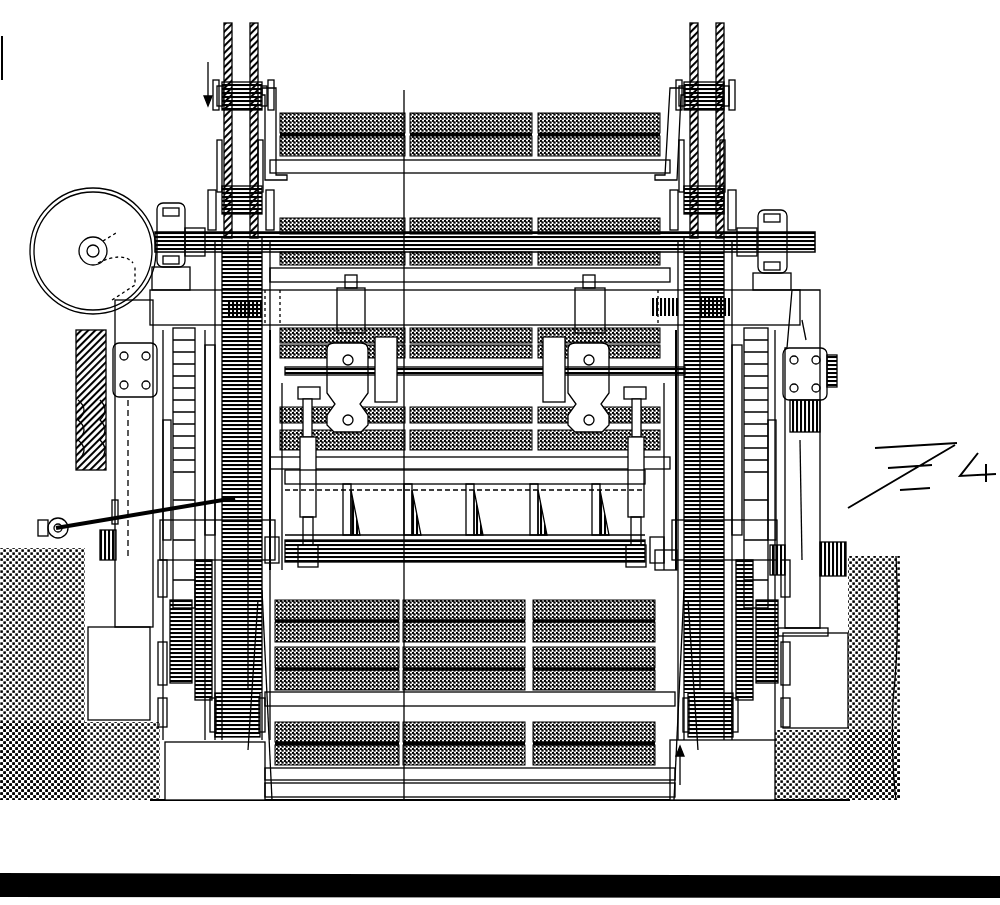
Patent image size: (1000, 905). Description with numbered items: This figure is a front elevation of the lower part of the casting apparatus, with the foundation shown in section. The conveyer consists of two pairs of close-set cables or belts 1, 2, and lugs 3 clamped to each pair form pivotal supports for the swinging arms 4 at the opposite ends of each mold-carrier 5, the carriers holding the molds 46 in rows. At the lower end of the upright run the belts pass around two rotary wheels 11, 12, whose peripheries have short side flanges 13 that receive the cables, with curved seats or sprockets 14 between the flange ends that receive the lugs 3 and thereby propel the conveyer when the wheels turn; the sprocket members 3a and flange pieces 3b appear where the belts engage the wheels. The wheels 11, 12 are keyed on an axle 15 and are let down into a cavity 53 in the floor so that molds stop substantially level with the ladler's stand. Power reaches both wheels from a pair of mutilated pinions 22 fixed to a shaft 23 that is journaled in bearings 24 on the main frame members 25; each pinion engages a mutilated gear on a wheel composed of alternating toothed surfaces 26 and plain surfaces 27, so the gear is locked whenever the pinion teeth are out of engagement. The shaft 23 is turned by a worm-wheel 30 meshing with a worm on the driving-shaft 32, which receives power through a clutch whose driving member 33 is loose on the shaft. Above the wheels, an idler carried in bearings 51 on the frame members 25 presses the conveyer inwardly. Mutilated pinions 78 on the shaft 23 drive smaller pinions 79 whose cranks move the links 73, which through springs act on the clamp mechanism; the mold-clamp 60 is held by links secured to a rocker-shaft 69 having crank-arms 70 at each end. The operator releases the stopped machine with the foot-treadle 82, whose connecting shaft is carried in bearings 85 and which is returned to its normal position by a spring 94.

The cable 1 is at (224, 53).
The cable 2 is at (258, 47).
The lug 3 is at (264, 197).
The sprocket 3a is at (244, 90).
The sprocket flange 3b is at (228, 103).
The swinging arm 4 is at (278, 100).
The mold-carrier 5 is at (404, 97).
The roller 46 is at (344, 120).
The bearing 51 is at (170, 203).
The driving clutch member 33 is at (40, 225).
The driving-shaft 32 is at (84, 250).
The pinion 22 is at (178, 345).
The shaft 23 is at (415, 372).
The bearing 24 is at (80, 388).
The main frame member 25 is at (128, 420).
The toothed surface 26 is at (472, 440).
The plain surface 27 is at (472, 480).
The worm-wheel 30 is at (80, 458).
The spring 94 is at (97, 447).
The side flange 13 is at (474, 489).
The sprocket 14 is at (468, 539).
The wheel 11 is at (232, 566).
The wheel 12 is at (690, 566).
The axle 15 is at (838, 545).
The bearing 85 is at (46, 538).
The foot-treadle 82 is at (192, 530).
The pinion 79 is at (468, 353).
The mutilated pinion 78 is at (485, 370).
The link 73 is at (316, 472).
The mold-clamp 60 is at (362, 490).
The rocker-shaft 69 is at (465, 561).
The crank-arm 70 is at (300, 565).
The cavity 53 is at (742, 777).